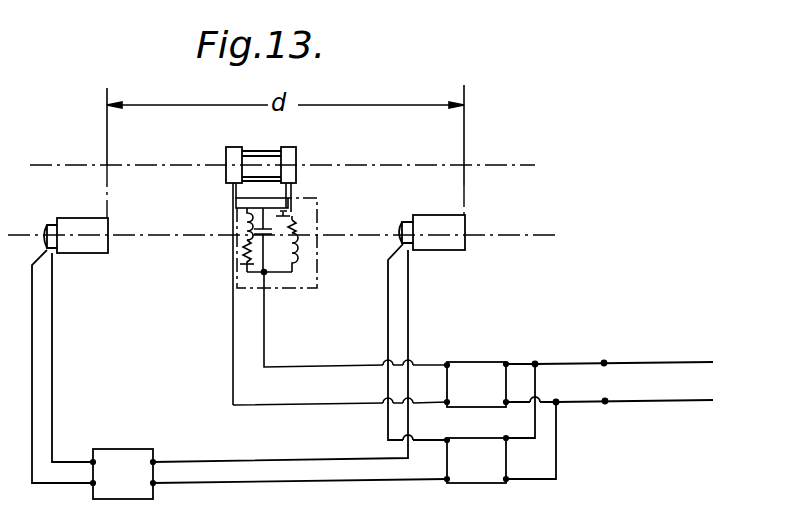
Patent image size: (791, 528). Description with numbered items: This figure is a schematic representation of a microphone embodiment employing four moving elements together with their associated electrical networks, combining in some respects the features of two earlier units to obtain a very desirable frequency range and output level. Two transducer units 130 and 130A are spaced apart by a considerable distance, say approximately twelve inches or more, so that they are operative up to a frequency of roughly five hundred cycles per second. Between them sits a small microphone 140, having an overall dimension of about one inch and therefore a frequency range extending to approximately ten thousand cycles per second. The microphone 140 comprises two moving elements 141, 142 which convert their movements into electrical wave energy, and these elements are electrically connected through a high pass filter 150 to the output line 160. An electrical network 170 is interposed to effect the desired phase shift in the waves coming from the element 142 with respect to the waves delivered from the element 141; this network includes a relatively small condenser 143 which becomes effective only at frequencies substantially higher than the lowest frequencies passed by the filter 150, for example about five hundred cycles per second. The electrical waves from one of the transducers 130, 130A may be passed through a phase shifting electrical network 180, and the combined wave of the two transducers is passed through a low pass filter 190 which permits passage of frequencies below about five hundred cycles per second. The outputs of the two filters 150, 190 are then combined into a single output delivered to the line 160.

The unit 130 is at (73, 219).
The unit 130A is at (439, 218).
The microphone 140 is at (254, 156).
The moving element 141 is at (232, 173).
The moving element 142 is at (290, 174).
The condenser 143 is at (284, 215).
The high pass filter 150 is at (480, 349).
The output line 160 is at (690, 361).
The electrical network 170 is at (317, 252).
The phase shifting electrical network 180 is at (134, 436).
The low pass filter 190 is at (470, 484).